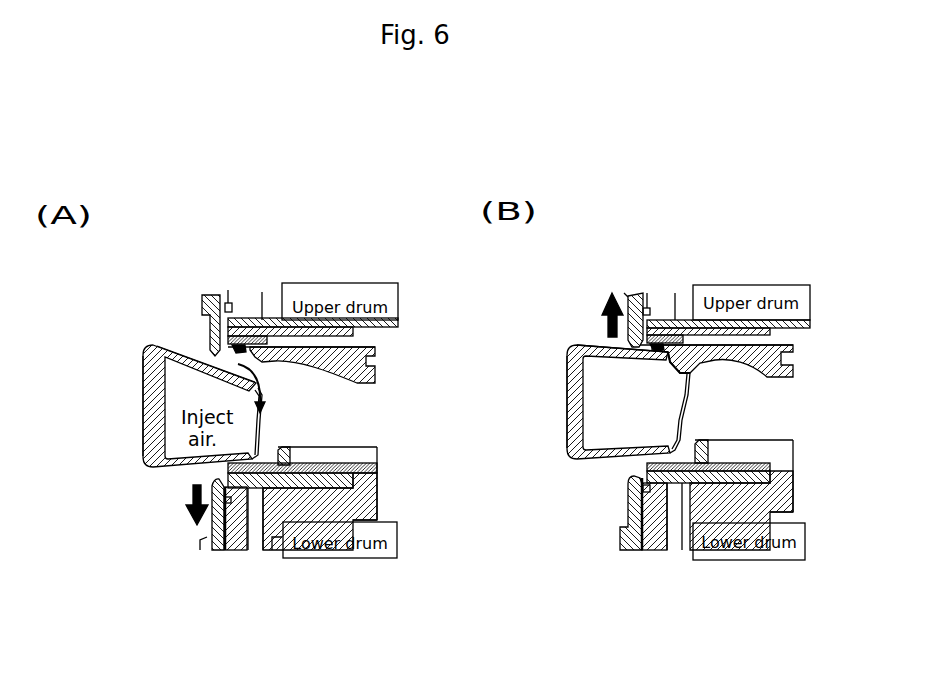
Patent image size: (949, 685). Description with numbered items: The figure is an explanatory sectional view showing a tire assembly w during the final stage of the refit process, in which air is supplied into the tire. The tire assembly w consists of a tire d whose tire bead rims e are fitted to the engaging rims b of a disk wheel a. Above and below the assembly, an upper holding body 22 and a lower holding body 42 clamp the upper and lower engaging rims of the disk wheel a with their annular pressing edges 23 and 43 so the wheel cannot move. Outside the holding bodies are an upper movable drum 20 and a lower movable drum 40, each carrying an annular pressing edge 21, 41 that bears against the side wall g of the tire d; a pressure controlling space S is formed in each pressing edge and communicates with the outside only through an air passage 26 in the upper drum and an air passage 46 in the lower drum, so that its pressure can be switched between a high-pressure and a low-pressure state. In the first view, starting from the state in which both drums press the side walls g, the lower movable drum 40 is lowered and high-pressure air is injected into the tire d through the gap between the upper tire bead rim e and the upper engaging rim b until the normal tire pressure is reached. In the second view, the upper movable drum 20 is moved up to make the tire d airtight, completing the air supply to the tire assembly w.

The upper movable drum 20 is at (205, 312).
The annular pressing edge 21 is at (175, 342).
The upper holding body 22 is at (258, 325).
The annular pressing edge of upper holding body 23 is at (265, 337).
The air passage 26 is at (247, 312).
The pressure controlling space S is at (247, 325).
The disk wheel a is at (340, 360).
The engaging rim b is at (262, 345).
The tire d is at (143, 400).
The tire bead rim e is at (227, 366).
The side wall g is at (222, 362).
The tire assembly w is at (150, 352).
The lower movable drum 40 is at (205, 536).
The annular pressing edge 41 is at (207, 483).
The lower holding body 42 is at (330, 505).
The annular pressing edge of lower holding body 43 is at (687, 458).
The air passage 46 is at (255, 542).